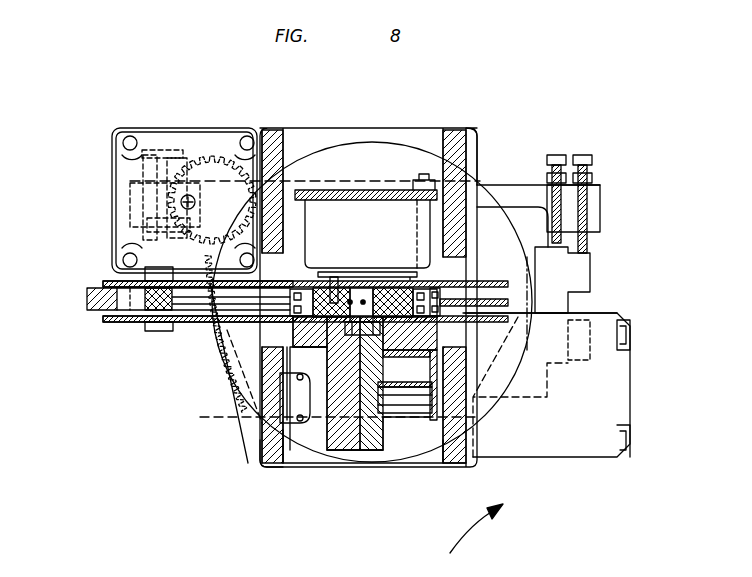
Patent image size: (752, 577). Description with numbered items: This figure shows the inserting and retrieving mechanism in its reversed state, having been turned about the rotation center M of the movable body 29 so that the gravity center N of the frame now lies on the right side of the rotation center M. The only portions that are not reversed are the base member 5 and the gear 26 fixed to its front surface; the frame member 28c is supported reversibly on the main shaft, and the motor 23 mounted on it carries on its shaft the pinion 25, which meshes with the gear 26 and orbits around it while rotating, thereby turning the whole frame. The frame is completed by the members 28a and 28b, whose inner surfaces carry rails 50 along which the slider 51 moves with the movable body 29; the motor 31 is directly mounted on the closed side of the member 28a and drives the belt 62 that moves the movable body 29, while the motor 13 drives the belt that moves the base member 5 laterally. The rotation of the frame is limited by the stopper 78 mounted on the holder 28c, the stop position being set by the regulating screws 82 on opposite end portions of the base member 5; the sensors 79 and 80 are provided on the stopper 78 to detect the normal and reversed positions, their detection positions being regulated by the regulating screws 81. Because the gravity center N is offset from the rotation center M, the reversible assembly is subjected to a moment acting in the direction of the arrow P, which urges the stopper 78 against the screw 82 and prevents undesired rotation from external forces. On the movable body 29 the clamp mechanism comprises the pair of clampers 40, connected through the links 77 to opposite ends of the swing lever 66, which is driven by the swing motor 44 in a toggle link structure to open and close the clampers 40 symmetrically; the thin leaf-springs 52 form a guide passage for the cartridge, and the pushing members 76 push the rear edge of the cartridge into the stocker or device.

The motor 23 is at (167, 130).
The pinion 25 is at (207, 157).
The swing motor 44 is at (327, 212).
The frame member 28c is at (484, 140).
The frame member 28a is at (457, 467).
The frame member 28b is at (268, 470).
The regulating screws 82 is at (518, 317).
The base member 5 is at (510, 185).
The regulating screws 81 is at (598, 205).
The sensor 79 is at (592, 270).
The stopper 78 is at (570, 302).
The sensor 80 is at (590, 340).
The motor 31 is at (553, 453).
The belt 62 is at (413, 403).
The motor 13 is at (357, 453).
The slider 51 is at (320, 442).
The rails 50 is at (275, 458).
The gear 26 is at (287, 400).
The links 77 is at (215, 330).
The pushing members 76 is at (148, 302).
The leaf-springs 52 is at (160, 331).
The movable body 29 is at (115, 280).
The clampers 40 is at (87, 300).
The swing lever 66 is at (393, 293).
The gravity center N is at (350, 302).
The rotation center M is at (363, 302).
The arrow P is at (482, 528).